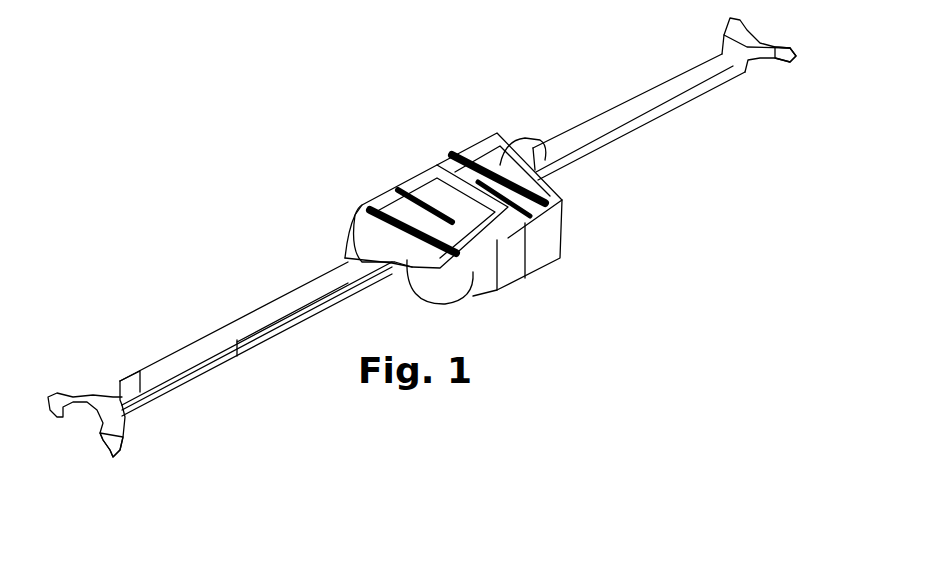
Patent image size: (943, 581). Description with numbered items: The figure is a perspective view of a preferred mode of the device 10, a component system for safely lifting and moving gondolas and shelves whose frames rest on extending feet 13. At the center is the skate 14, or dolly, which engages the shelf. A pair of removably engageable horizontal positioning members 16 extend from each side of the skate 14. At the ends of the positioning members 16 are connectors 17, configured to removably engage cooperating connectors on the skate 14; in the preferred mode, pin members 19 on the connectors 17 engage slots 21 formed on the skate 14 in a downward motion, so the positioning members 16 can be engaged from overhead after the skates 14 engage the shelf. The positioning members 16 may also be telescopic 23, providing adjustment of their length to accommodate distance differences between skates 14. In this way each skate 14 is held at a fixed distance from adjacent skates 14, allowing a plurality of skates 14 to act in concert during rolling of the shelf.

The device 10 is at (276, 196).
The extending feet 13 is at (392, 193).
The skate 14 is at (560, 200).
The horizontal positioning members 16 is at (280, 297).
The connectors 17 is at (120, 400).
The pin members 19 is at (117, 450).
The slots 21 is at (532, 168).
The telescopic engagement 23 is at (237, 352).